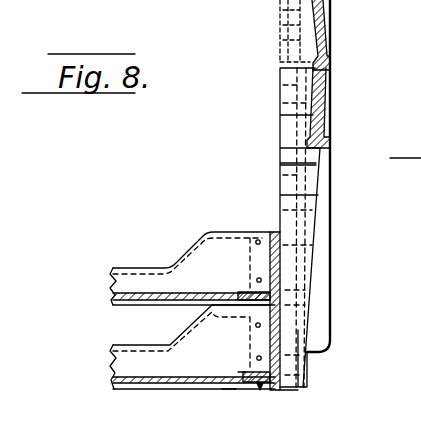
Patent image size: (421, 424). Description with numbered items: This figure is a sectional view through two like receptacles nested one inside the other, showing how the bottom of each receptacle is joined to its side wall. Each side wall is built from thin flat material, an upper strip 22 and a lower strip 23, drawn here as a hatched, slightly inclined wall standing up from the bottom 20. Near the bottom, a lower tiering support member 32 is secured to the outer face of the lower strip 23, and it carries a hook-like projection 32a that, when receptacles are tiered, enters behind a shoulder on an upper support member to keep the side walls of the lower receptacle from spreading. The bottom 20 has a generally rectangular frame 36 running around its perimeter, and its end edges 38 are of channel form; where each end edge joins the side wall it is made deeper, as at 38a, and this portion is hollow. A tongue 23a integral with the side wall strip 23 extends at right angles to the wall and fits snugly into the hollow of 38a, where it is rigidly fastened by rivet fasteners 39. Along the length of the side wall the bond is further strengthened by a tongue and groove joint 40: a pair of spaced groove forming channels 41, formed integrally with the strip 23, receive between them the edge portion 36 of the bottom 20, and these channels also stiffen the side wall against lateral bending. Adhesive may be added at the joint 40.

The bottom 20 is at (112, 380).
The upper strip 22 is at (323, 18).
The lower strip 23 is at (280, 268).
The tongue 23a is at (248, 268).
The lower tiering support member 32 is at (310, 365).
The projection 32a is at (286, 392).
The frame 36 is at (232, 389).
The end edge member 38 is at (140, 268).
The deeper end edge portion 38a is at (183, 250).
The rivet fasteners 39 is at (259, 240).
The tongue and groove joint 40 is at (262, 386).
The groove forming channels 41 is at (245, 372).